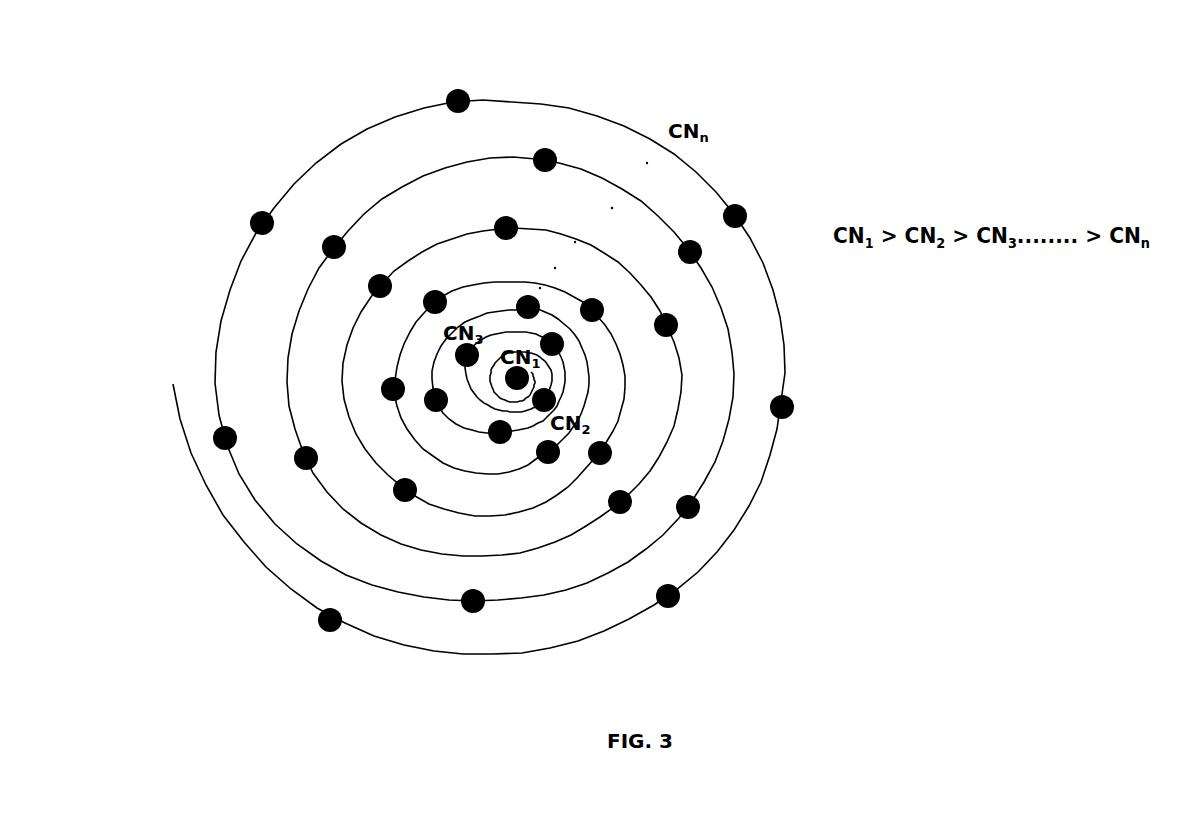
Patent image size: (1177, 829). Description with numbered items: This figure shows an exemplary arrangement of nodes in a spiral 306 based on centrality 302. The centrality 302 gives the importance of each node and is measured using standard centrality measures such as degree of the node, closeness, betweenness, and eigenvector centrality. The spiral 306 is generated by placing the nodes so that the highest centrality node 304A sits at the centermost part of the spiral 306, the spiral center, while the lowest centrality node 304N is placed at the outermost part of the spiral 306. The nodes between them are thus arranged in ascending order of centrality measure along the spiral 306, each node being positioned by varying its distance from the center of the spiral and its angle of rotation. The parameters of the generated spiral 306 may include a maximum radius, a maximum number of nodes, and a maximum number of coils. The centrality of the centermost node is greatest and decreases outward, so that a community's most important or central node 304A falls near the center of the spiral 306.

The centrality 302 is at (531, 380).
The highest centrality node 304A is at (548, 364).
The lowest centrality node 304N is at (322, 622).
The spiral 306 is at (527, 100).